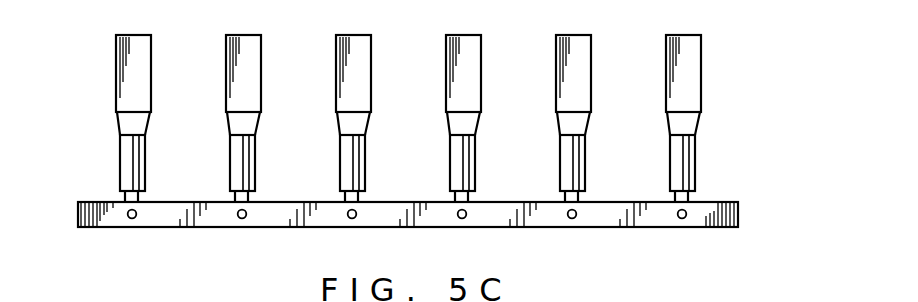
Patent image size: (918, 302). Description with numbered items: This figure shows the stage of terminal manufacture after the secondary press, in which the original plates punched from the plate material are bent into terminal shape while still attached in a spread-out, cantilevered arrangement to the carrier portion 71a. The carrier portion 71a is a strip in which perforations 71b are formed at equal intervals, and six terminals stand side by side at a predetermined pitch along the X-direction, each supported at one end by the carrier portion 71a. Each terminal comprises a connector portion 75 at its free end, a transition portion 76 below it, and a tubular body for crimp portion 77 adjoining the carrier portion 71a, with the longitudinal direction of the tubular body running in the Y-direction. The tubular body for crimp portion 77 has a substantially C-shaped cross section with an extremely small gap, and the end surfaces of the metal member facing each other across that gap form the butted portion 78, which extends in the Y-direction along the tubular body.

The carrier portion 71a is at (742, 213).
The perforations 71b is at (132, 221).
The connector portion 75 is at (152, 68).
The transition portion 76 is at (692, 124).
The tubular body for crimp portion 77 is at (119, 156).
The butted portion 78 is at (132, 178).